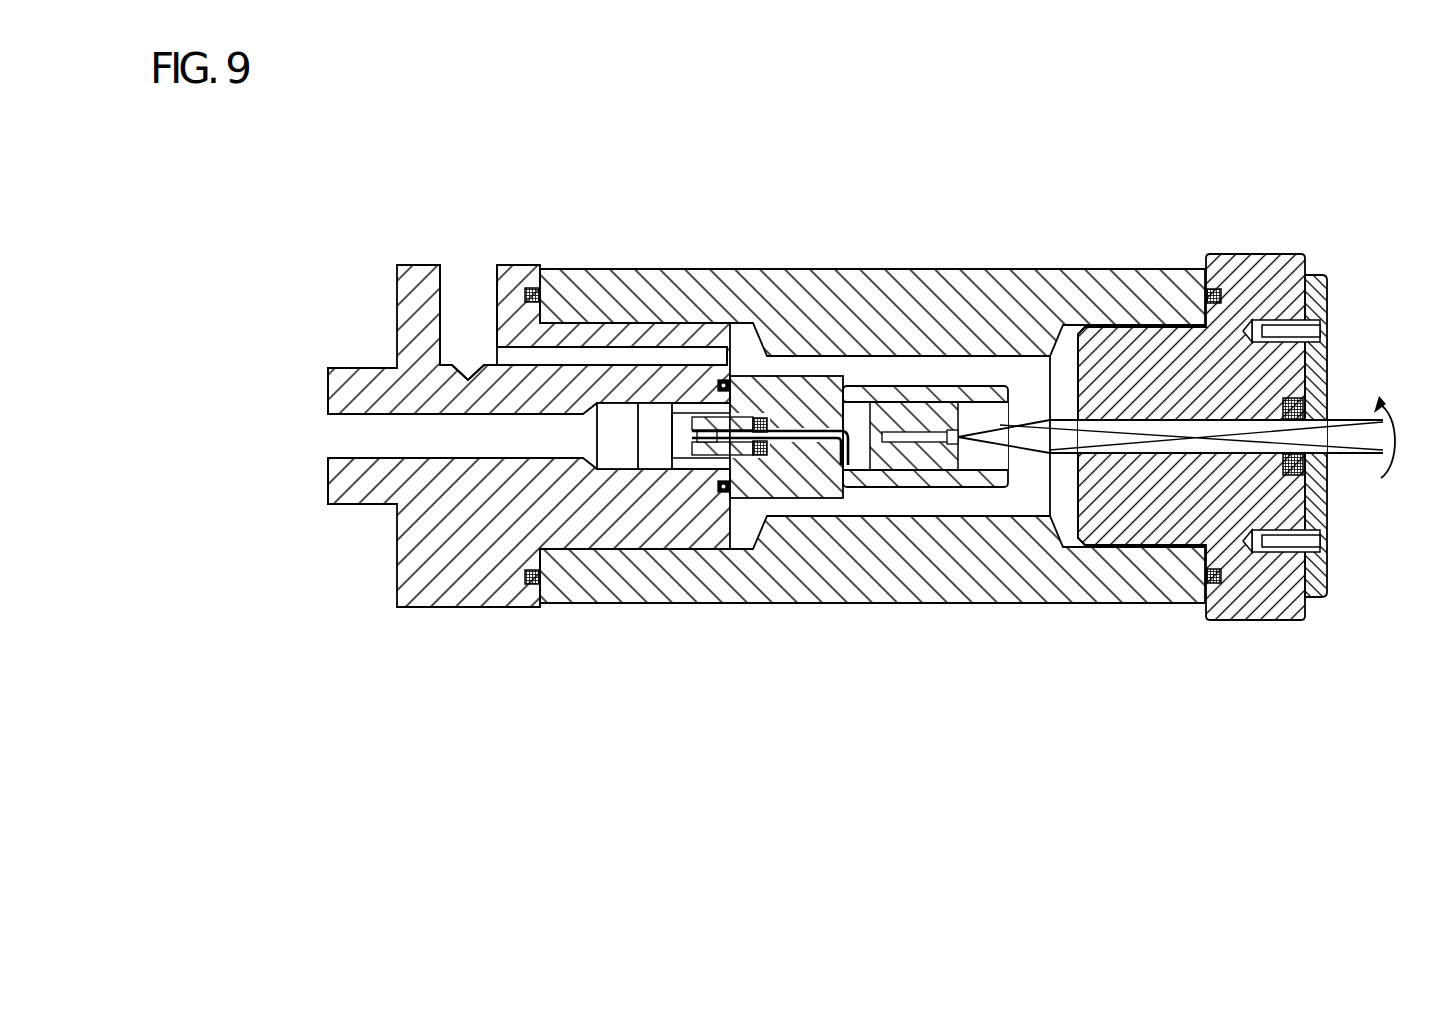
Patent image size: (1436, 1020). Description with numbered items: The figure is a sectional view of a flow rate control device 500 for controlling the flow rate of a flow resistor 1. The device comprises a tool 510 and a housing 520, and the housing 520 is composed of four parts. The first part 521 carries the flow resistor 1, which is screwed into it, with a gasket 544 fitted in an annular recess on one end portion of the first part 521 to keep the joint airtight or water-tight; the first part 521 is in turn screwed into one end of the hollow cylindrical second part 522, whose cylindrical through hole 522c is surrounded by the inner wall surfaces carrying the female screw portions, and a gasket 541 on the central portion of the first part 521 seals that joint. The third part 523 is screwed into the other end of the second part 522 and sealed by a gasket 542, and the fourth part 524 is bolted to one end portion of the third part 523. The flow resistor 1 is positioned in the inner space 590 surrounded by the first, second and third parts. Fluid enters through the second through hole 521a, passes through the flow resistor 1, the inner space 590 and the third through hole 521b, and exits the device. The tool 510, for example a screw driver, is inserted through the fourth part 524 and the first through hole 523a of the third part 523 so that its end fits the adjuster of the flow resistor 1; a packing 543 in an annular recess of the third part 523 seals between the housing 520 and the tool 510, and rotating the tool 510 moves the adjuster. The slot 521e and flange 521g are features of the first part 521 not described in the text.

The flow resistor 1 is at (790, 500).
The flow rate control device 500 is at (1033, 101).
The tool 510 is at (1358, 418).
The housing 520 is at (774, 236).
The first part 521 is at (407, 332).
The second through hole 521a is at (375, 440).
The third through hole 521b is at (484, 332).
The slot 521e is at (480, 293).
The flange 521g is at (347, 367).
The second part 522 is at (880, 295).
The through hole 522c is at (905, 507).
The third part 523 is at (1257, 254).
The first through hole 523a is at (1076, 437).
The fourth part 524 is at (1322, 276).
The gasket 541 is at (518, 290).
The gasket 542 is at (1216, 288).
The packing 543 is at (1297, 395).
The gasket 544 is at (718, 384).
The inner space 590 is at (984, 492).